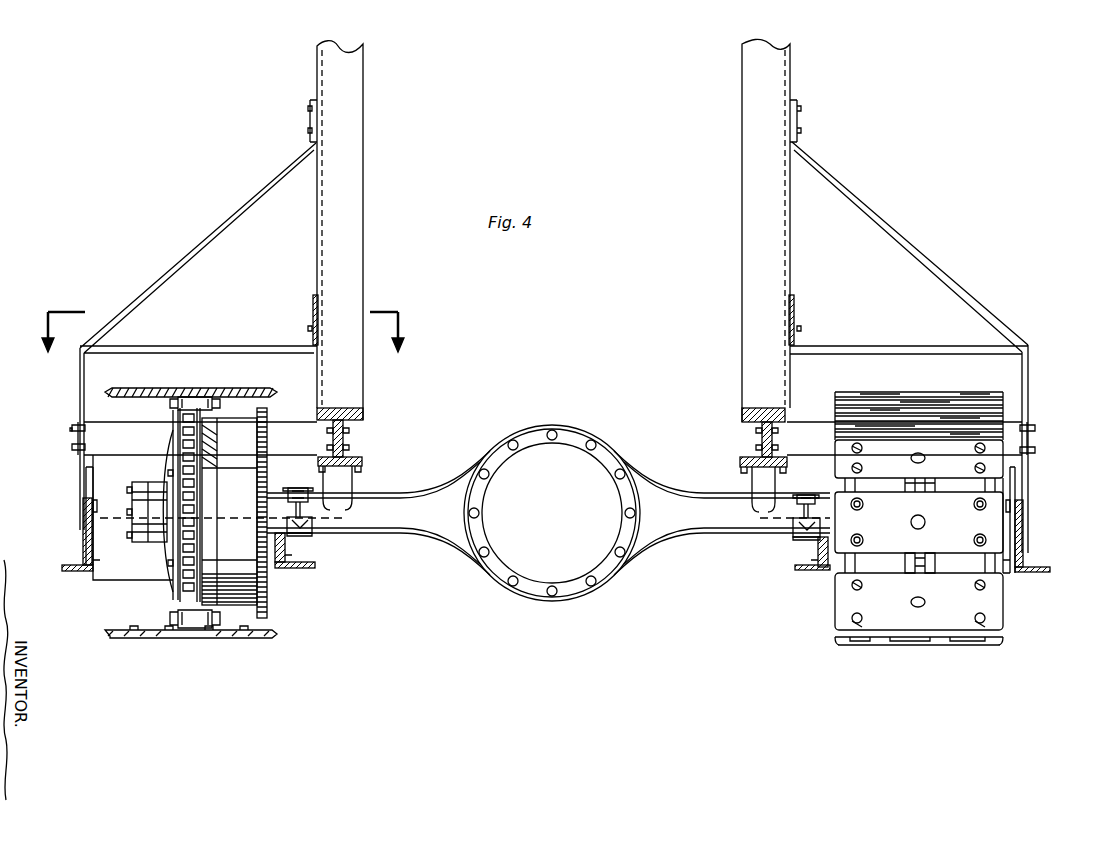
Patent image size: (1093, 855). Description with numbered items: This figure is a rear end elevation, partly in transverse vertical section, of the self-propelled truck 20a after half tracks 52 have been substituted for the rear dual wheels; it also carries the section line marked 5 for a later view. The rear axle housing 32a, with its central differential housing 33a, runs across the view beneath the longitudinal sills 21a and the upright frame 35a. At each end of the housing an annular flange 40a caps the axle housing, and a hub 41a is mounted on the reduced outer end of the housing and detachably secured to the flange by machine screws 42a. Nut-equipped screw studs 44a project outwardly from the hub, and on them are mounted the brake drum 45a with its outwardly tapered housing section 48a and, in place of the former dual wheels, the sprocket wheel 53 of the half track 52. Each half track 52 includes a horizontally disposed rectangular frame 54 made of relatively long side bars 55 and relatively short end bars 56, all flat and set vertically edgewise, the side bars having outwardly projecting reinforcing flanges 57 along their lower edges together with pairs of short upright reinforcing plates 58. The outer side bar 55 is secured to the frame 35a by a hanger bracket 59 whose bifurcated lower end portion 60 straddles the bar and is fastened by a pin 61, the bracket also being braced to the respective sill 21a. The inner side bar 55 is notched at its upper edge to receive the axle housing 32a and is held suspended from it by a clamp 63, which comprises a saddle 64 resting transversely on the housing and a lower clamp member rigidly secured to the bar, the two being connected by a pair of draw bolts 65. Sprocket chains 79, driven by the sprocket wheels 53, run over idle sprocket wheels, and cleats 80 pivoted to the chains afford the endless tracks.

The frame 35a is at (357, 272).
The section line 5- 5 is at (222, 347).
The sprocket chain 79 is at (193, 400).
The cleat 80 is at (240, 390).
The hanger bracket 59 is at (72, 434).
The bifurcated lower end portion 60 is at (86, 479).
The pin 61 is at (86, 507).
The upright reinforcing plate 58 is at (83, 545).
The reinforcing flange 57 is at (62, 567).
The rectangular frame 54 is at (57, 580).
The side bar 55 is at (85, 567).
The screw stud 44a is at (170, 465).
The sprocket wheel 53 is at (178, 590).
The end bar 56 is at (265, 592).
The hub 41a is at (148, 480).
The annular flange 40a is at (137, 483).
The machine screw 42a is at (128, 500).
The outwardly tapered housing section 48a is at (206, 447).
The brake drum 45a is at (229, 511).
The rear axle housing 32a is at (275, 495).
The saddle 64 is at (300, 485).
The draw bolt 65 is at (302, 541).
The clamp 63 is at (336, 492).
The longitudinal sill 21a is at (758, 432).
The differential housing 33a is at (566, 452).
The self-propelled truck 20a is at (548, 501).
The half track 52 is at (233, 654).